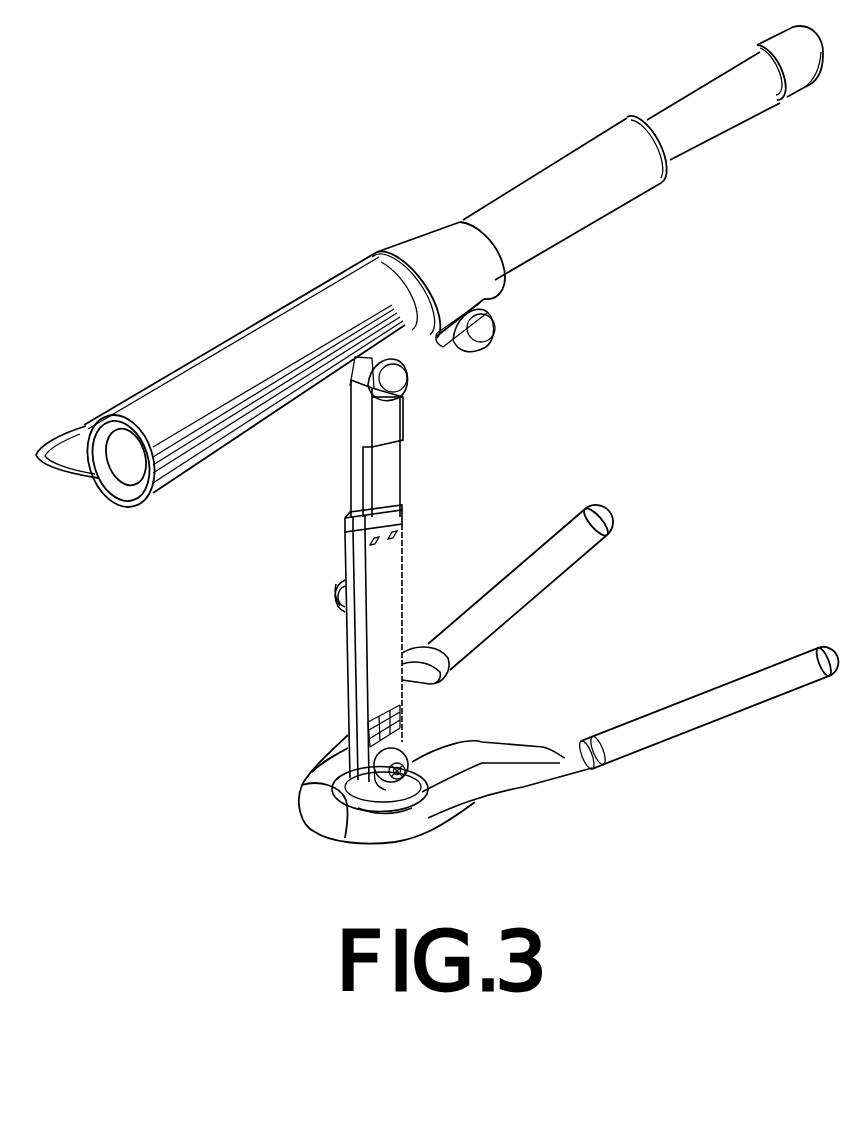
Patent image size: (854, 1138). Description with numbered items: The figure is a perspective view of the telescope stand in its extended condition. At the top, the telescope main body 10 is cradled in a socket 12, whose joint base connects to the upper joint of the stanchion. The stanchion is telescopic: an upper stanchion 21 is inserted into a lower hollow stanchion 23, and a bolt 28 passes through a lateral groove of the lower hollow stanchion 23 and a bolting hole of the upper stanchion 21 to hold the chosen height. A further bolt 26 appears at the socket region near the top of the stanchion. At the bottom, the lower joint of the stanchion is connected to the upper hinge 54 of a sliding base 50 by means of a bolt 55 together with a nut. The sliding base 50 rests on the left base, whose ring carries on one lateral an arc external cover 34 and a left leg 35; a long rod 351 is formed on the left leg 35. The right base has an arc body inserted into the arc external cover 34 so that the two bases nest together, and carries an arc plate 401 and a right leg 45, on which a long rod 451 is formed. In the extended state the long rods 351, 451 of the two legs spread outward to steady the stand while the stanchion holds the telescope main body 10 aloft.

The telescope main body 10 is at (250, 346).
The socket 12 is at (432, 243).
The upper stanchion 21 is at (380, 485).
The lower hollow stanchion 23 is at (388, 577).
The clamp knob 26 is at (400, 380).
The bolt 28 is at (337, 588).
The arc external cover 34 is at (318, 815).
The left leg 35 is at (430, 681).
The long rod 351 is at (550, 565).
The arc plate 401 is at (498, 762).
The right leg 45 is at (525, 790).
The long rod 451 is at (690, 720).
The sliding base 50 is at (343, 785).
The upper hinge 54 is at (396, 754).
The bolt 55 is at (402, 776).